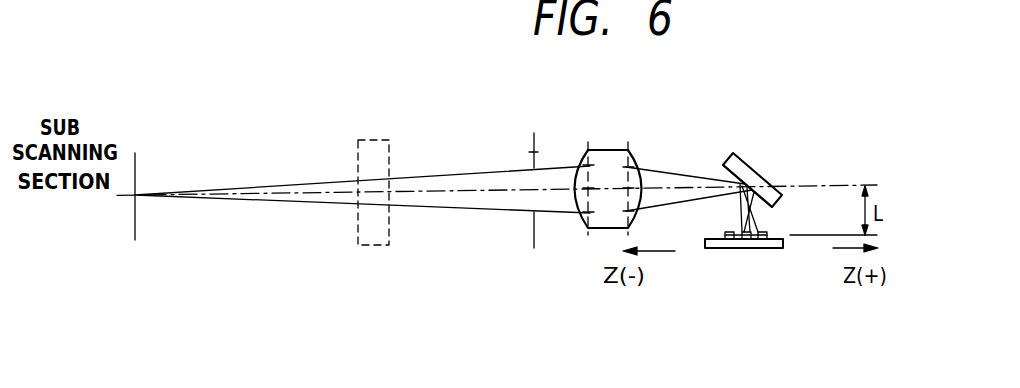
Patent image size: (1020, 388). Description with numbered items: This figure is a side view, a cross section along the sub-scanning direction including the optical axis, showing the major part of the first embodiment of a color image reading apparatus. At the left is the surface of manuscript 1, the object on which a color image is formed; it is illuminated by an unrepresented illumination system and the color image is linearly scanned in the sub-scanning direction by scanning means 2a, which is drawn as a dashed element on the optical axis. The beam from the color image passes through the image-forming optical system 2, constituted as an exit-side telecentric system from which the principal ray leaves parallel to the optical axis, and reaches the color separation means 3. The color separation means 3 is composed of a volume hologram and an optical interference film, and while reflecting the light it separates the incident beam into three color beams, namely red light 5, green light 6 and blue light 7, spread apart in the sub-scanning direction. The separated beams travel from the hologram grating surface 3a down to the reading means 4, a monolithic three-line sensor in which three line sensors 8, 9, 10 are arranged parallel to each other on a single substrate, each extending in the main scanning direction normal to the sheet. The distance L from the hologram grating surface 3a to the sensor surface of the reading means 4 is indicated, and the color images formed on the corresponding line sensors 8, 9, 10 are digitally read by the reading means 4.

The surface of manuscript 1 is at (136, 157).
The image-forming optical system 2 is at (655, 124).
The scanning means 2a is at (376, 139).
The color separation means 3 is at (748, 158).
The hologram grating surface 3a is at (726, 165).
The reading means 4 is at (783, 247).
The red light 5 is at (731, 223).
The green light 6 is at (735, 200).
The blue light 7 is at (757, 217).
The line sensor 8 is at (729, 248).
The line sensor 9 is at (745, 248).
The line sensor 10 is at (764, 248).